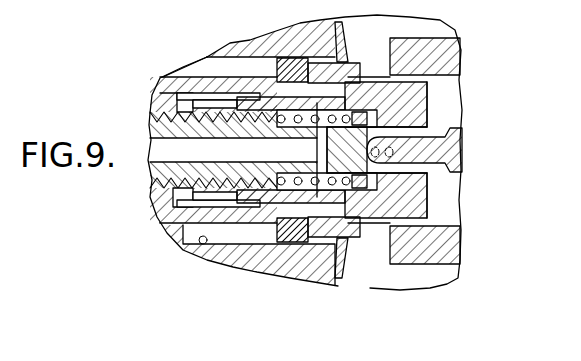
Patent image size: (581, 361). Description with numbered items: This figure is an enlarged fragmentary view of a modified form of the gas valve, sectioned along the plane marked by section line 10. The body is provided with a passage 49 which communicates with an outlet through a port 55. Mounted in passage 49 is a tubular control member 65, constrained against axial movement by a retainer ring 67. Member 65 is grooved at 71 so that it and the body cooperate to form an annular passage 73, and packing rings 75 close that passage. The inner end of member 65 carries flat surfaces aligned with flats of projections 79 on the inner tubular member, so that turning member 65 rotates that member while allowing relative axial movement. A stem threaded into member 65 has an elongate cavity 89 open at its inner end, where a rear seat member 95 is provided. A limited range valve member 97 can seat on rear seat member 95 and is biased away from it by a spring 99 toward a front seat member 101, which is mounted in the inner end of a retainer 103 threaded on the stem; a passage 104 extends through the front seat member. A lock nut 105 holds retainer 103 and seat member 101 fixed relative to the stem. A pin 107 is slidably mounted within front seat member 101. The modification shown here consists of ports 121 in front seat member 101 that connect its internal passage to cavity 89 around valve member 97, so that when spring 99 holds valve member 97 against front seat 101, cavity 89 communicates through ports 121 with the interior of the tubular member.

The section line of FIG. 10 is at (378, 77).
The passage 49 is at (201, 244).
The port 55 is at (223, 70).
The tubular control member 65 is at (250, 73).
The retainer ring 67 is at (343, 22).
The groove 71 is at (240, 65).
The annular passage 73 is at (198, 62).
The packing ring 75 is at (292, 57).
The projection 79 is at (437, 45).
The elongate cavity 89 is at (261, 150).
The rear seat member 95 is at (313, 146).
The limited range valve member 97 is at (306, 244).
The spring 99 is at (263, 244).
The front seat member 101 is at (423, 266).
The retainer 103 is at (222, 224).
The passage 104 is at (441, 150).
The lock nut 105 is at (187, 208).
The pin 107 is at (453, 148).
The port 121 is at (395, 133).